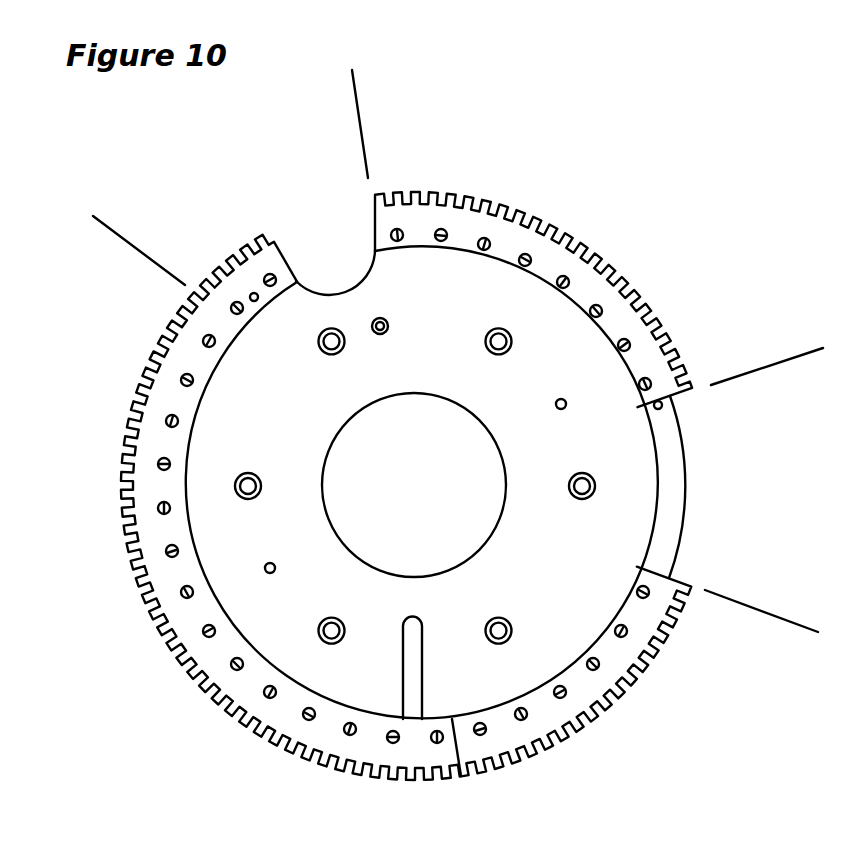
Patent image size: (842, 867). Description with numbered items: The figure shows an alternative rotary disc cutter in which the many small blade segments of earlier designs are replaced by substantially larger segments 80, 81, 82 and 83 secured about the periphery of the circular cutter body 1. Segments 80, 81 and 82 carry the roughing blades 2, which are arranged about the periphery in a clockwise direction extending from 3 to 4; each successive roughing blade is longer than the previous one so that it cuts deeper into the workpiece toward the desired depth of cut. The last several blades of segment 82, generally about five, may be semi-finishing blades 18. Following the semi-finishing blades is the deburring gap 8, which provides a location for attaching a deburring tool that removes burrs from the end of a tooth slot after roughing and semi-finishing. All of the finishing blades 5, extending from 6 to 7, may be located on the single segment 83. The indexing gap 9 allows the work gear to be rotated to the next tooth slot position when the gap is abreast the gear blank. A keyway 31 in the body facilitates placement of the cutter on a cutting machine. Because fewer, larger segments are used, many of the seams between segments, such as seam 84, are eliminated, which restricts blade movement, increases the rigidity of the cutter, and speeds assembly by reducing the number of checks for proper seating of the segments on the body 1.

The circular body portion 1 is at (444, 349).
The roughing blades 2 is at (163, 658).
The start of roughing blade series 3 is at (743, 609).
The end of roughing blade series 4 is at (132, 254).
The finishing blades 5 is at (585, 230).
The start of finishing blade series 6 is at (368, 140).
The end of finishing blade series 7 is at (745, 366).
The deburring gap 8 is at (330, 248).
The indexing gap 9 is at (713, 486).
The semi-finishing blades 18 is at (231, 250).
The keyway 31 is at (426, 622).
The segment 80 is at (582, 672).
The segment 81 is at (225, 645).
The segment 82 is at (172, 402).
The segment 83 is at (542, 265).
The seam 84 is at (148, 577).